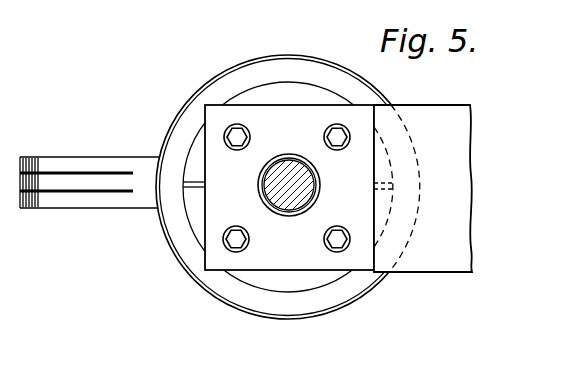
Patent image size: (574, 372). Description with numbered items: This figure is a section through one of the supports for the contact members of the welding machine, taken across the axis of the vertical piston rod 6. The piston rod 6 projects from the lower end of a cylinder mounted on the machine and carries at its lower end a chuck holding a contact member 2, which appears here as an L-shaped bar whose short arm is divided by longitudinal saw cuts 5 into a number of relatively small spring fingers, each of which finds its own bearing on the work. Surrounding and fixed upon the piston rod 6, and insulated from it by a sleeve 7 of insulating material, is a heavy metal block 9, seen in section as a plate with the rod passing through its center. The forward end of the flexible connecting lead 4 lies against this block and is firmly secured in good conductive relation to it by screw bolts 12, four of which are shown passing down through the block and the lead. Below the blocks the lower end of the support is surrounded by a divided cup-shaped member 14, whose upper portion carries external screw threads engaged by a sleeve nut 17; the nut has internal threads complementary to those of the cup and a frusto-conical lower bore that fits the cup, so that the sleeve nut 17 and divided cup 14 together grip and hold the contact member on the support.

The tube 2 is at (148, 210).
The flexible lead 4 is at (459, 178).
The slots 5 is at (58, 180).
The piston rod 6 is at (310, 190).
The sleeve 7 is at (258, 182).
The metal block 9 is at (228, 165).
The screw bolts 12 is at (325, 133).
The divided cup-shaped member 14 is at (303, 66).
The sleeve nut 17 is at (238, 73).